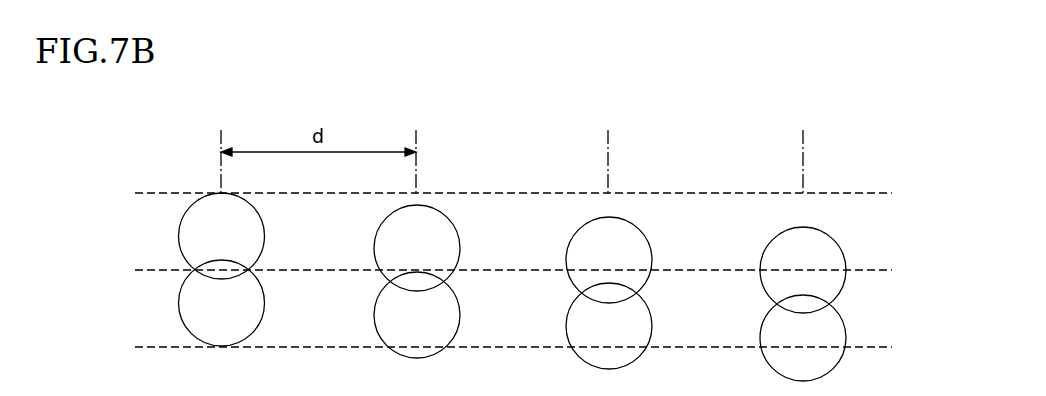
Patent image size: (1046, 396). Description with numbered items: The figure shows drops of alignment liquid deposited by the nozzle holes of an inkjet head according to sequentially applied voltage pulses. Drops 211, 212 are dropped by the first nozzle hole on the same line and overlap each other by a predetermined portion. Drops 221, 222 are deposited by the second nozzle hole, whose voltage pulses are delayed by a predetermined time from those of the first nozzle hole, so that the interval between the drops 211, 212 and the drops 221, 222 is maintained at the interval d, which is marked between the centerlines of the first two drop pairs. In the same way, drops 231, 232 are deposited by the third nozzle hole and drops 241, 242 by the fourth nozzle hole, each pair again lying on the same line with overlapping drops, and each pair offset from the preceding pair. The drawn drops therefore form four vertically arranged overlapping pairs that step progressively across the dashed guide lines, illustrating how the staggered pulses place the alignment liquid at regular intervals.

The drop of alignment liquid 211 is at (178, 234).
The drop of alignment liquid 212 is at (178, 301).
The drop of alignment liquid 221 is at (374, 246).
The drop of alignment liquid 222 is at (374, 312).
The drop of alignment liquid 231 is at (573, 234).
The drop of alignment liquid 232 is at (573, 301).
The drop of alignment liquid 241 is at (767, 244).
The drop of alignment liquid 242 is at (767, 312).